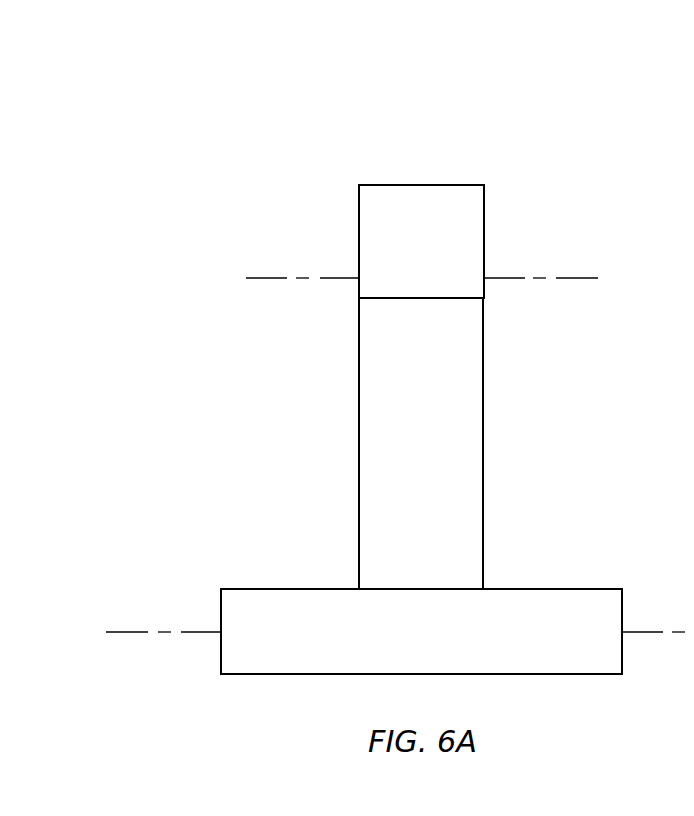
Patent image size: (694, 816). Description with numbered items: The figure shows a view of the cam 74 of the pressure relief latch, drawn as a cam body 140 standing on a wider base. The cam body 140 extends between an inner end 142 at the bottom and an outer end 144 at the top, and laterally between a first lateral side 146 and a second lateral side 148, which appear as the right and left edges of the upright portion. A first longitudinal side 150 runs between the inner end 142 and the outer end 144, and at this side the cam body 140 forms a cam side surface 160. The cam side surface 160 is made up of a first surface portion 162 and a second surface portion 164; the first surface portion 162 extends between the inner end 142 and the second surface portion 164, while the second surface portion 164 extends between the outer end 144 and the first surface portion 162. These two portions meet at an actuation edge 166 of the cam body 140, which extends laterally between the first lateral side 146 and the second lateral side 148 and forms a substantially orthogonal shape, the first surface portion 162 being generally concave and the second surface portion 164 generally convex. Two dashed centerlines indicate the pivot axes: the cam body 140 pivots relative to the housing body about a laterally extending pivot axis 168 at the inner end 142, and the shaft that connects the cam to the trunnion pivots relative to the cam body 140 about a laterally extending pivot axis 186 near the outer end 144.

The cam 74 is at (424, 395).
The cam body 140 is at (457, 448).
The inner end 142 is at (552, 690).
The outer end 144 is at (405, 167).
The first lateral side 146 is at (500, 356).
The second lateral side 148 is at (333, 455).
The first longitudinal side 150 is at (468, 522).
The cam side surface 160 is at (470, 238).
The first surface portion 162 is at (385, 403).
The second surface portion 164 is at (468, 202).
The actuation edge 166 is at (395, 298).
The pivot axis 168 is at (138, 632).
The pivot axis 186 is at (265, 280).